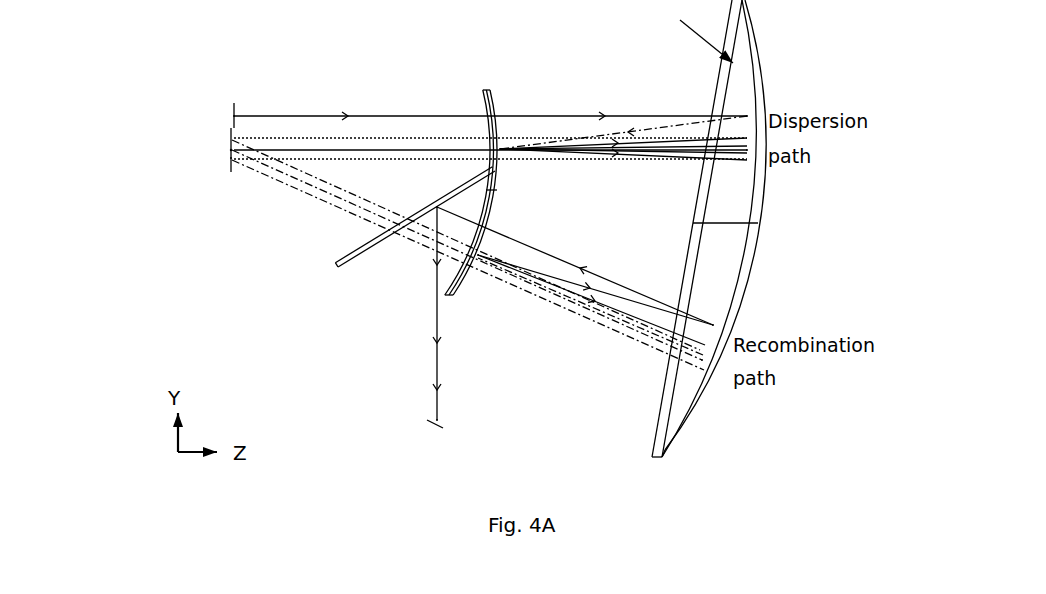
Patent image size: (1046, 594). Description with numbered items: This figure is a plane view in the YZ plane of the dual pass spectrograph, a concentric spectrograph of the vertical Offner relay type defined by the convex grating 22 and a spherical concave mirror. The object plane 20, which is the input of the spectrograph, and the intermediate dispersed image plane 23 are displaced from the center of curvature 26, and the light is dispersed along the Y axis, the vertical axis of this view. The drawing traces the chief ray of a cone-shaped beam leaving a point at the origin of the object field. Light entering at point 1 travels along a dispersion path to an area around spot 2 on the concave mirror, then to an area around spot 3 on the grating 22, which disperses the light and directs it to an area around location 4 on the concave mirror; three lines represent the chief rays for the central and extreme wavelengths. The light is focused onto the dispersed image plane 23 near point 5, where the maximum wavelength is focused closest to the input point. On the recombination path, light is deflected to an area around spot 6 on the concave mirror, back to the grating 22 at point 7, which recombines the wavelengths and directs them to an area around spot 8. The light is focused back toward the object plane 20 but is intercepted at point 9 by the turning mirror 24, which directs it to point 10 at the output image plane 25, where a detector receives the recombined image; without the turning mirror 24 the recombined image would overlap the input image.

The point 1 is at (247, 107).
The spot 2 is at (746, 111).
The spot 3 is at (512, 172).
The location 4 is at (741, 170).
The dispersed image point 5 is at (241, 182).
The spot 6 is at (694, 376).
The second diffraction point on grating 7 is at (481, 283).
The spot 8 is at (711, 312).
The turning mirror reflection point 9 is at (427, 195).
The output image point 10 is at (453, 406).
The object plane 20 is at (235, 97).
The grating 22 is at (496, 175).
The dispersed image plane 23 is at (223, 180).
The turning mirror 24 is at (352, 268).
The output image plane 25 is at (427, 432).
The center of curvature 26 is at (228, 150).